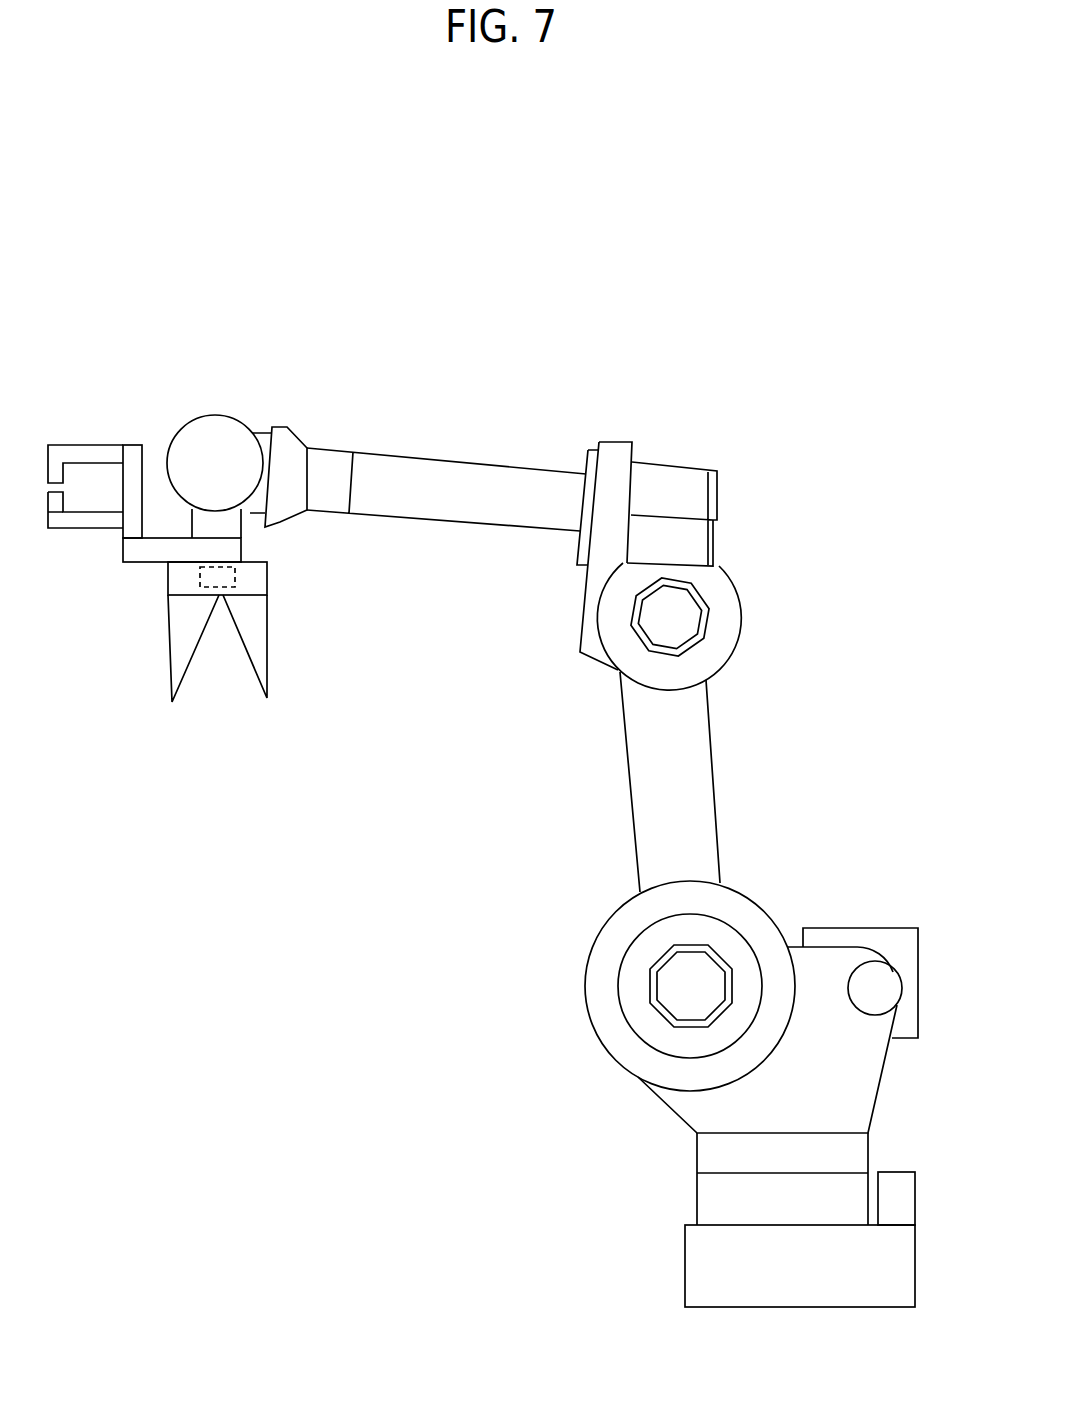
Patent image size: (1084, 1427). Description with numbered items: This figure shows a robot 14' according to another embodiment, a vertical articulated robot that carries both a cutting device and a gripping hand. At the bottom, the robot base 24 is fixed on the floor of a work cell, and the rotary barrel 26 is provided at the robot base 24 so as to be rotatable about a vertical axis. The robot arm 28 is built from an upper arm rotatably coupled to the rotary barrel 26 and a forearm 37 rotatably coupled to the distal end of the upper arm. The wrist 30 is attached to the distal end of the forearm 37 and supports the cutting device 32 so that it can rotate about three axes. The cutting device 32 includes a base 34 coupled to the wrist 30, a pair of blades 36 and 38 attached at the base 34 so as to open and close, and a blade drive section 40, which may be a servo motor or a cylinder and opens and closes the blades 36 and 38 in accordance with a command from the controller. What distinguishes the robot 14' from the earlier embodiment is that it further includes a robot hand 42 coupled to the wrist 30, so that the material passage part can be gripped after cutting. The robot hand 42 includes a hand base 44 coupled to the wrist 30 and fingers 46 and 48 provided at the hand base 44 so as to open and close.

The robot 14' is at (502, 726).
The robot base 24 is at (715, 1268).
The rotary barrel 26 is at (860, 1067).
The robot arm 28 is at (624, 413).
The wrist 30 is at (215, 433).
The cutting device 32 is at (268, 650).
The base 34 is at (687, 770).
The blade 36 is at (188, 628).
The forearm 37 is at (471, 488).
The blade 38 is at (253, 642).
The blade drive section 40 is at (235, 578).
The robot hand 42 is at (144, 402).
The hand base 44 is at (135, 448).
The finger 46 is at (80, 448).
The finger 48 is at (85, 523).